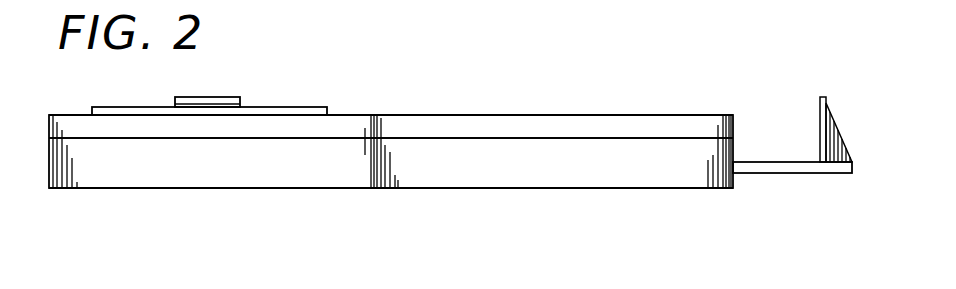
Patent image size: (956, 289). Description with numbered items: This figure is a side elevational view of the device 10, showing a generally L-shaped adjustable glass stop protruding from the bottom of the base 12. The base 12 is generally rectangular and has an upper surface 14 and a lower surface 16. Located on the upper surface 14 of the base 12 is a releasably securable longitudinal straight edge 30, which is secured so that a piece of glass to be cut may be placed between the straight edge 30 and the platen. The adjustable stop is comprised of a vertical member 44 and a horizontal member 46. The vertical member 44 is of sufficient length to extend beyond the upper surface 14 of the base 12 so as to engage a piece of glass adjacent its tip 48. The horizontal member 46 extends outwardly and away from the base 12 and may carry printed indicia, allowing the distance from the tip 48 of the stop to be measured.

The device 10 is at (345, 194).
The base 12 is at (442, 163).
The upper surface 14 is at (493, 115).
The lower surface 16 is at (260, 190).
The straight edge 30 is at (303, 106).
The vertical member 44 is at (832, 110).
The horizontal member 46 is at (775, 177).
The tip 48 is at (818, 110).